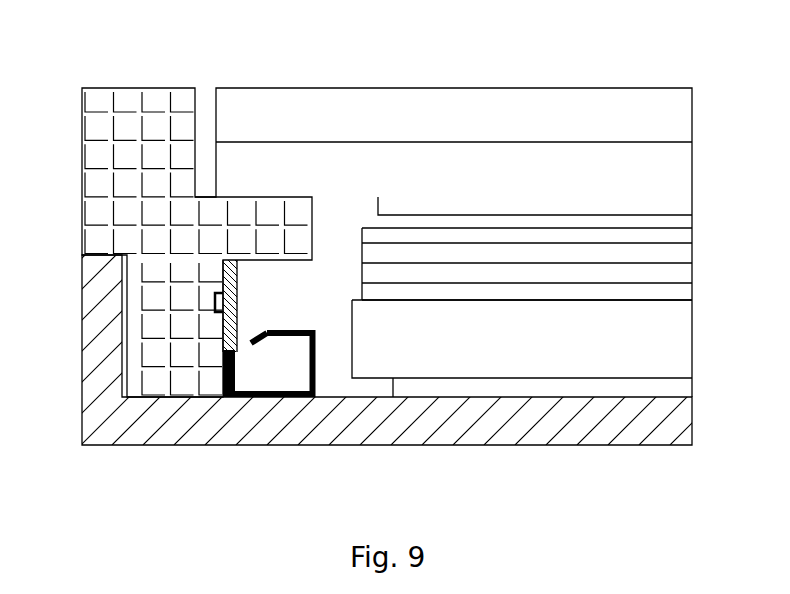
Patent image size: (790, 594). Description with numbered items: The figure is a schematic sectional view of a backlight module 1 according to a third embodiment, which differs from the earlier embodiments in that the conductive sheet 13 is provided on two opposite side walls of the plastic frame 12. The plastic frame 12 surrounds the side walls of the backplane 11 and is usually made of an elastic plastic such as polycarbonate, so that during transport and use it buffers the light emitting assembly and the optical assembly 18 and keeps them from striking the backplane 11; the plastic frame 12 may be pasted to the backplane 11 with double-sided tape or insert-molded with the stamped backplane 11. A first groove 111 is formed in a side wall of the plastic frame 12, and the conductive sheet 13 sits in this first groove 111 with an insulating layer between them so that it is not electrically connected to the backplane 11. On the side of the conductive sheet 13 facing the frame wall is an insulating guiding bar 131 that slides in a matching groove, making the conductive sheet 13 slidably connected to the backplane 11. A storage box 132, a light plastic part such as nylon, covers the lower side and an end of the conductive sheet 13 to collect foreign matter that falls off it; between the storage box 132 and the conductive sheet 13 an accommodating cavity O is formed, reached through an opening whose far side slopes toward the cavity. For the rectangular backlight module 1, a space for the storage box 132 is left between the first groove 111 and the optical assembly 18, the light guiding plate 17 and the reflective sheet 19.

The backlight module 1 is at (443, 217).
The backplane 11 is at (90, 338).
The plastic frame 12 is at (107, 180).
The first groove 111 is at (220, 268).
The conductive sheet 13 is at (215, 373).
The insulating guiding bar 131 is at (217, 305).
The storage box 132 is at (313, 372).
The accommodating cavity O is at (255, 380).
The light guiding plate 17 is at (672, 358).
The optical assembly 18 is at (682, 268).
The reflective sheet 19 is at (675, 388).